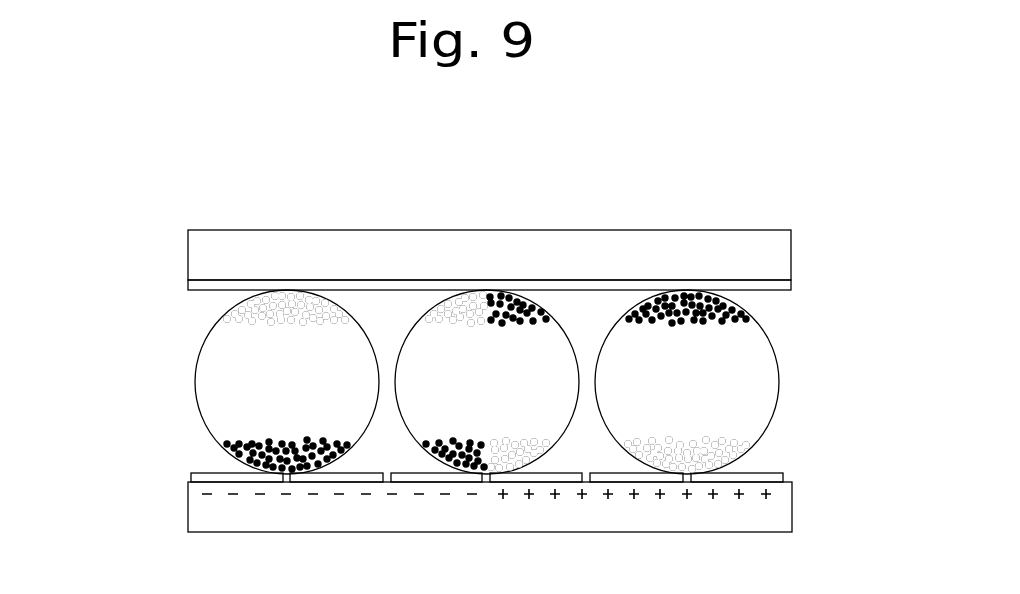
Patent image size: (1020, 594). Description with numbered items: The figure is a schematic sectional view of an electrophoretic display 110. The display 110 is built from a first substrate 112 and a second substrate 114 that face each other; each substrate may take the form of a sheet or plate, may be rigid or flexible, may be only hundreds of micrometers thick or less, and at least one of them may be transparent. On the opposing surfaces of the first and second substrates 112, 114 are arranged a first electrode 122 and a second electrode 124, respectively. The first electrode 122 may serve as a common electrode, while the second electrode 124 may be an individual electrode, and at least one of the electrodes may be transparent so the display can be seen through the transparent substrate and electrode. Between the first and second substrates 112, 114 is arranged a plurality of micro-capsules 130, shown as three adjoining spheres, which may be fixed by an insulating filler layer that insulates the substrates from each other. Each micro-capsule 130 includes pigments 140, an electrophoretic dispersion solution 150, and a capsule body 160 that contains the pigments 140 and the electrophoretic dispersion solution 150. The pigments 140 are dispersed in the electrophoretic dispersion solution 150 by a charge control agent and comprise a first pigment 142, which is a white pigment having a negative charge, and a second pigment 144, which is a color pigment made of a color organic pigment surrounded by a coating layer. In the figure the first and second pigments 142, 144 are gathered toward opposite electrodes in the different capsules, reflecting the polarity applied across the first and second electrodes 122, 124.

The electrophoretic display 110 is at (794, 164).
The first substrate 112 is at (783, 254).
The second substrate 114 is at (783, 508).
The first electrode 122 is at (783, 283).
The second electrode 124 is at (785, 477).
The micro-capsules 130 is at (58, 305).
The pigments 140 is at (118, 372).
The first pigment 142 is at (255, 327).
The second pigment 144 is at (243, 438).
The electrophoretic dispersion solution 150 is at (218, 363).
The capsule body 160 is at (206, 333).